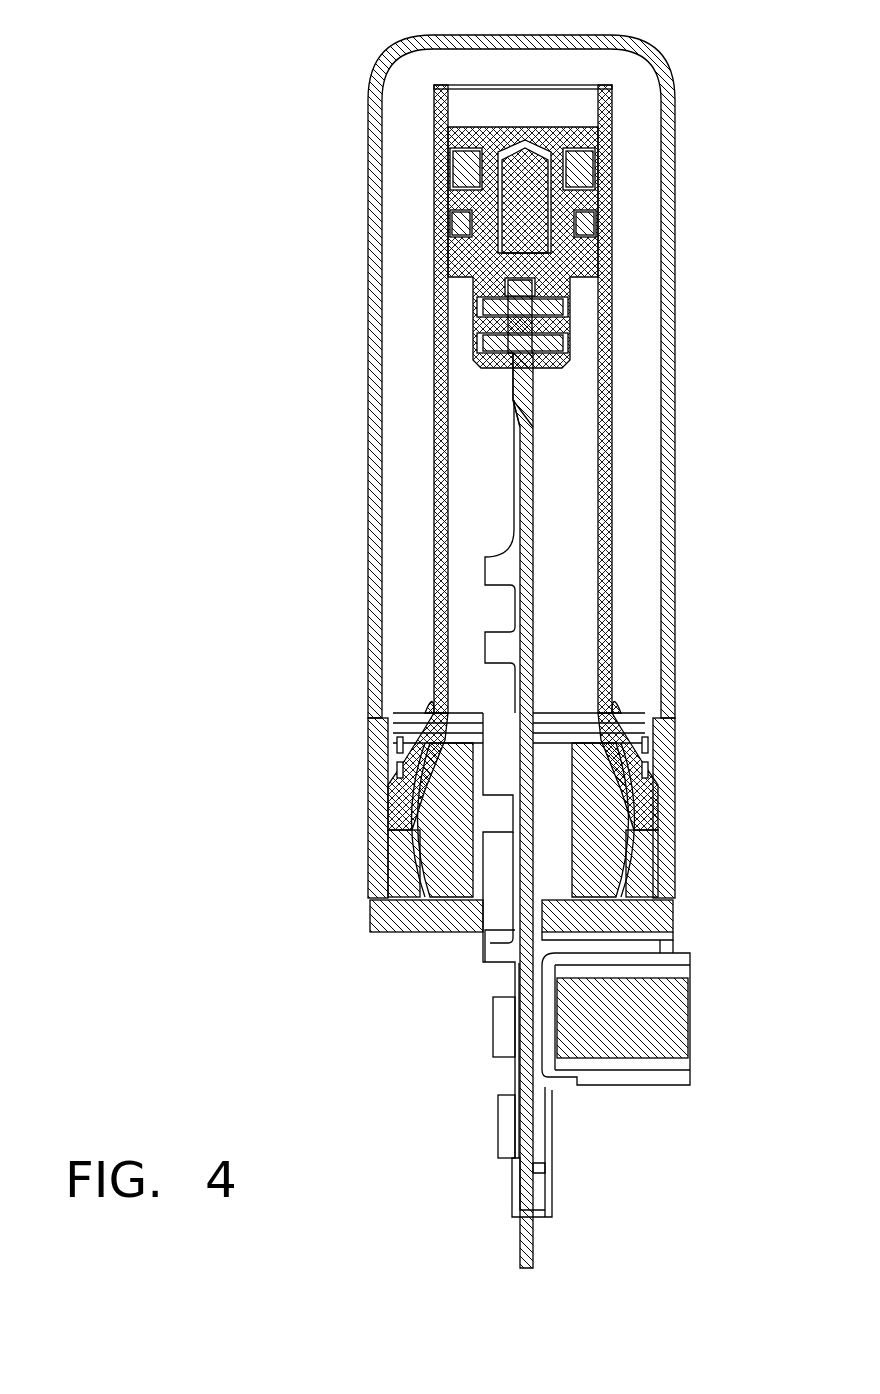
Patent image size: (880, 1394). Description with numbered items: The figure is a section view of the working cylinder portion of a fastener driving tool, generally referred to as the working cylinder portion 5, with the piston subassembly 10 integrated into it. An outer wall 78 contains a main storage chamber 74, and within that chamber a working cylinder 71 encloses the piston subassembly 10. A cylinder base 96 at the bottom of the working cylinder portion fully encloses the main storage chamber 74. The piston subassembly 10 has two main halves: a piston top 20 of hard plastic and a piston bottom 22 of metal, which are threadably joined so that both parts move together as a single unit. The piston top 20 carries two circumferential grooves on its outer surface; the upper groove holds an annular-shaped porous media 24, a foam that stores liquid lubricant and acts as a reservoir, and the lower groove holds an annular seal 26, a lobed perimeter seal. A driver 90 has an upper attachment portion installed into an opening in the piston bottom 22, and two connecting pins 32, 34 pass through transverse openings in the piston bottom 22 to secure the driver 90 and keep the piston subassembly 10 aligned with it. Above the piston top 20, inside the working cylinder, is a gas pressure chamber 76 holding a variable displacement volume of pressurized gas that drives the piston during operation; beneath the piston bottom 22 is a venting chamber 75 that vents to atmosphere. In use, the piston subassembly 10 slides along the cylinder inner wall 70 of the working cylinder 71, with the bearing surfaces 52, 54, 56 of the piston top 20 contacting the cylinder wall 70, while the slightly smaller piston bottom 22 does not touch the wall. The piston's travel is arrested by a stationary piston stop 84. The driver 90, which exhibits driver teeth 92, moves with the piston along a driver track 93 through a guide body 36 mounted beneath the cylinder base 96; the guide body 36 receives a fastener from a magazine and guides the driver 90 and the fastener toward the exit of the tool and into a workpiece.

The working cylinder portion of a driving tool 5 is at (292, 58).
The piston subassembly 10 is at (576, 110).
The piston top 20 is at (612, 122).
The piston bottom 22 is at (598, 264).
The annular-shaped porous media 24 is at (582, 175).
The annular seal 26 is at (592, 218).
The connecting pin 32 is at (556, 305).
The connecting pin 34 is at (556, 342).
The guide body 36 is at (550, 1088).
The bearing surface 52 is at (447, 141).
The bearing surface 54 is at (447, 200).
The bearing surface 56 is at (447, 247).
The cylinder inner wall 70 is at (605, 540).
The working cylinder 71 is at (552, 492).
The main storage chamber 74 is at (634, 594).
The venting chamber 75 is at (494, 503).
The gas pressure chamber 76 is at (476, 108).
The outer wall 78 is at (668, 572).
The stationary piston stop 84 is at (595, 768).
The driver 90 is at (533, 402).
The driver teeth 92 is at (505, 648).
The driver track 93 is at (536, 1188).
The cylinder base 96 is at (413, 938).